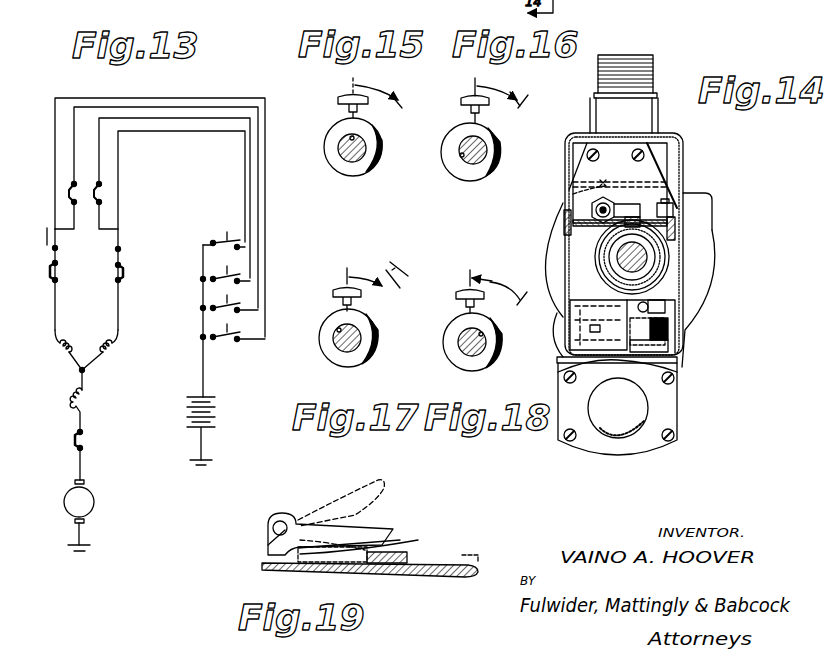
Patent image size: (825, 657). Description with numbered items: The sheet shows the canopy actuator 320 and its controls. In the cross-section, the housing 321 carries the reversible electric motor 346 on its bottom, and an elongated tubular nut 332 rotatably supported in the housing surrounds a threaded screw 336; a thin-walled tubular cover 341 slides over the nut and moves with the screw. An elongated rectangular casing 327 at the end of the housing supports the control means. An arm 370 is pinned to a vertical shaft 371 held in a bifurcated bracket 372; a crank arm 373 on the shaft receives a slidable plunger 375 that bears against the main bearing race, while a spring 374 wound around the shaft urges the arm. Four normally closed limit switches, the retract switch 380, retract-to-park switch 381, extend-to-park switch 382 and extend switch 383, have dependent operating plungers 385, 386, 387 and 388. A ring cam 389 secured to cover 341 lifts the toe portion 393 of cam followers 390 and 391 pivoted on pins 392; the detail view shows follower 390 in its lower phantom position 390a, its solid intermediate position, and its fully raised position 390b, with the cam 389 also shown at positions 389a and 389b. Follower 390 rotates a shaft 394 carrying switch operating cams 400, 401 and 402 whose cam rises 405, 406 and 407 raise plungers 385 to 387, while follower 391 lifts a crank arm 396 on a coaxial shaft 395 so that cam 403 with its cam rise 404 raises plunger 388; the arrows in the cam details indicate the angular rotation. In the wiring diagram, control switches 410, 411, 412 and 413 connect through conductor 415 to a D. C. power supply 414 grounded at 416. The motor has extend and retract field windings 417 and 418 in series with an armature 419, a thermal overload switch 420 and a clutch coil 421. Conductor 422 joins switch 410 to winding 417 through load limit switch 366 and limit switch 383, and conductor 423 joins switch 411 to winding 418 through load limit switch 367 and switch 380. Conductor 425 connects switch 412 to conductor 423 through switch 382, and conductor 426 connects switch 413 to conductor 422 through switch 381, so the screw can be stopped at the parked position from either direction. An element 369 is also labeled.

In FIG. 14, the actuator 320 is at (664, 73).
In FIG. 14, the housing 321 is at (688, 372).
In FIG. 14, the casing 327 is at (576, 133).
In FIG. 14, the tubular nut 332 is at (618, 256).
In FIG. 14, the screw 336 is at (604, 282).
In FIG. 14, the tubular cover 341 is at (600, 238).
In FIG. 13, the electric motor 346 is at (92, 480).
In FIG. 14, the electric motor 346 is at (636, 452).
In FIG. 13, the extend load limit switch 366 is at (122, 274).
In FIG. 13, the retract load limit switch 367 is at (58, 270).
In FIG. 14, the retract load limit switch 367 is at (560, 357).
In FIG. 14, the relay assembly 369 is at (575, 315).
In FIG. 14, the arm 370 is at (668, 330).
In FIG. 14, the vertical shaft 371 is at (696, 311).
In FIG. 14, the bifurcated bracket 372 is at (683, 362).
In FIG. 14, the crank arm 373 is at (670, 292).
In FIG. 14, the spring 374 is at (672, 345).
In FIG. 14, the slidable plunger 375 is at (655, 300).
In FIG. 13, the retract limit switch 380 is at (46, 248).
In FIG. 13, the retract-to-park limit switch 381 is at (104, 193).
In FIG. 13, the extend-to-park limit switch 382 is at (68, 193).
In FIG. 13, the extend limit switch 383 is at (122, 238).
In FIG. 14, the extend limit switch 383 is at (633, 167).
In FIG. 15, the operating plunger 385 is at (340, 106).
In FIG. 14, the operating plunger 385 is at (592, 212).
In FIG. 16, the operating plunger 386 is at (468, 110).
In FIG. 17, the operating plunger 387 is at (340, 308).
In FIG. 18, the operating plunger 388 is at (463, 310).
In FIG. 14, the operating plunger 388 is at (565, 184).
In FIG. 14, the ring cam 389 is at (650, 247).
In FIG. 19, the ring cam 389 is at (407, 558).
In FIG. 19, the contact strip end 389a is at (478, 556).
In FIG. 19, the insulating base strip 389b is at (320, 575).
In FIG. 19, the cam follower 390 is at (375, 530).
In FIG. 19, the phantom outline 390a is at (380, 585).
In FIG. 19, the phantom outline 390b is at (350, 482).
In FIG. 14, the cam follower 391 is at (683, 222).
In FIG. 14, the pins 392 is at (680, 210).
In FIG. 19, the toe portion 393 is at (395, 541).
In FIG. 15, the rotatable shaft 394 is at (352, 163).
In FIG. 16, the rotatable shaft 394 is at (482, 170).
In FIG. 17, the rotatable shaft 394 is at (335, 362).
In FIG. 18, the coaxial shaft 395 is at (464, 369).
In FIG. 14, the crank arm 396 is at (643, 205).
In FIG. 15, the switch operating cam 400 is at (343, 135).
In FIG. 16, the switch operating cam 401 is at (496, 148).
In FIG. 17, the switch operating cam 402 is at (366, 355).
In FIG. 18, the switch operating cam 403 is at (484, 370).
In FIG. 18, the cam rise 404 is at (490, 332).
In FIG. 15, the cam rise 405 is at (372, 140).
In FIG. 16, the cam rise 406 is at (452, 162).
In FIG. 17, the cam rise 407 is at (372, 334).
In FIG. 13, the extend control switch 410 is at (213, 242).
In FIG. 13, the retract control switch 411 is at (228, 340).
In FIG. 13, the extend-to-park control switch 412 is at (213, 266).
In FIG. 13, the retract-to-park control switch 413 is at (212, 298).
In FIG. 13, the D. C. power supply 414 is at (215, 418).
In FIG. 13, the conductor 415 is at (204, 370).
In FIG. 13, the ground 416 is at (87, 553).
In FIG. 13, the extend field winding 417 is at (103, 352).
In FIG. 13, the retract field winding 418 is at (61, 353).
In FIG. 13, the armature 419 is at (94, 500).
In FIG. 13, the thermal overload switch 420 is at (59, 455).
In FIG. 13, the clutch coil 421 is at (88, 405).
In FIG. 13, the conductor 422 is at (221, 136).
In FIG. 13, the conductor 423 is at (178, 98).
In FIG. 13, the conductor 425 is at (74, 134).
In FIG. 13, the conductor 426 is at (99, 150).